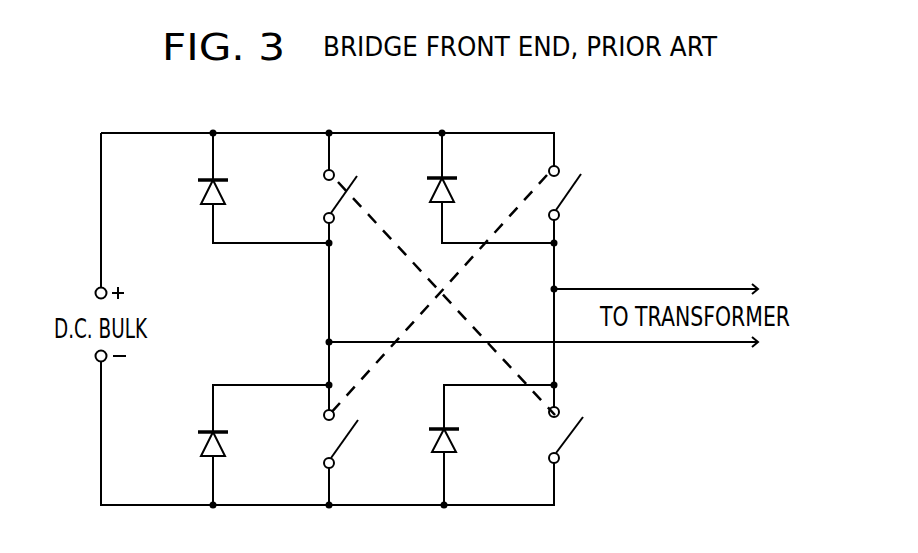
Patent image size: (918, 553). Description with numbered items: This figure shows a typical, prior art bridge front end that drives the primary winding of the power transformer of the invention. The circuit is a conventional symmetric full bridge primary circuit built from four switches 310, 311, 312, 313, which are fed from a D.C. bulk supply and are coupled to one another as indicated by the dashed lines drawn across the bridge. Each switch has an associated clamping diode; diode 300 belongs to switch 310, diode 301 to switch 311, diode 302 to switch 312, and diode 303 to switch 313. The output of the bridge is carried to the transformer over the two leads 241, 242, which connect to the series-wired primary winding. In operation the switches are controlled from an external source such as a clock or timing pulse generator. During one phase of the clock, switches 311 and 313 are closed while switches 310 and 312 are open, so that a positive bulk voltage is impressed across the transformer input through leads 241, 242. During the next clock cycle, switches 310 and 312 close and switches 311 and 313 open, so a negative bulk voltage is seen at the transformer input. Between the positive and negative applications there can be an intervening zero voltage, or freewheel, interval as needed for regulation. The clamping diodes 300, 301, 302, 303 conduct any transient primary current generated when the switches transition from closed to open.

The clamping diode 300 is at (200, 195).
The clamping diode 301 is at (200, 448).
The clamping diode 302 is at (455, 445).
The clamping diode 303 is at (452, 194).
The switch 310 is at (335, 200).
The switch 311 is at (341, 445).
The switch 312 is at (572, 440).
The switch 313 is at (572, 185).
The lead 241 is at (695, 285).
The lead 242 is at (695, 346).